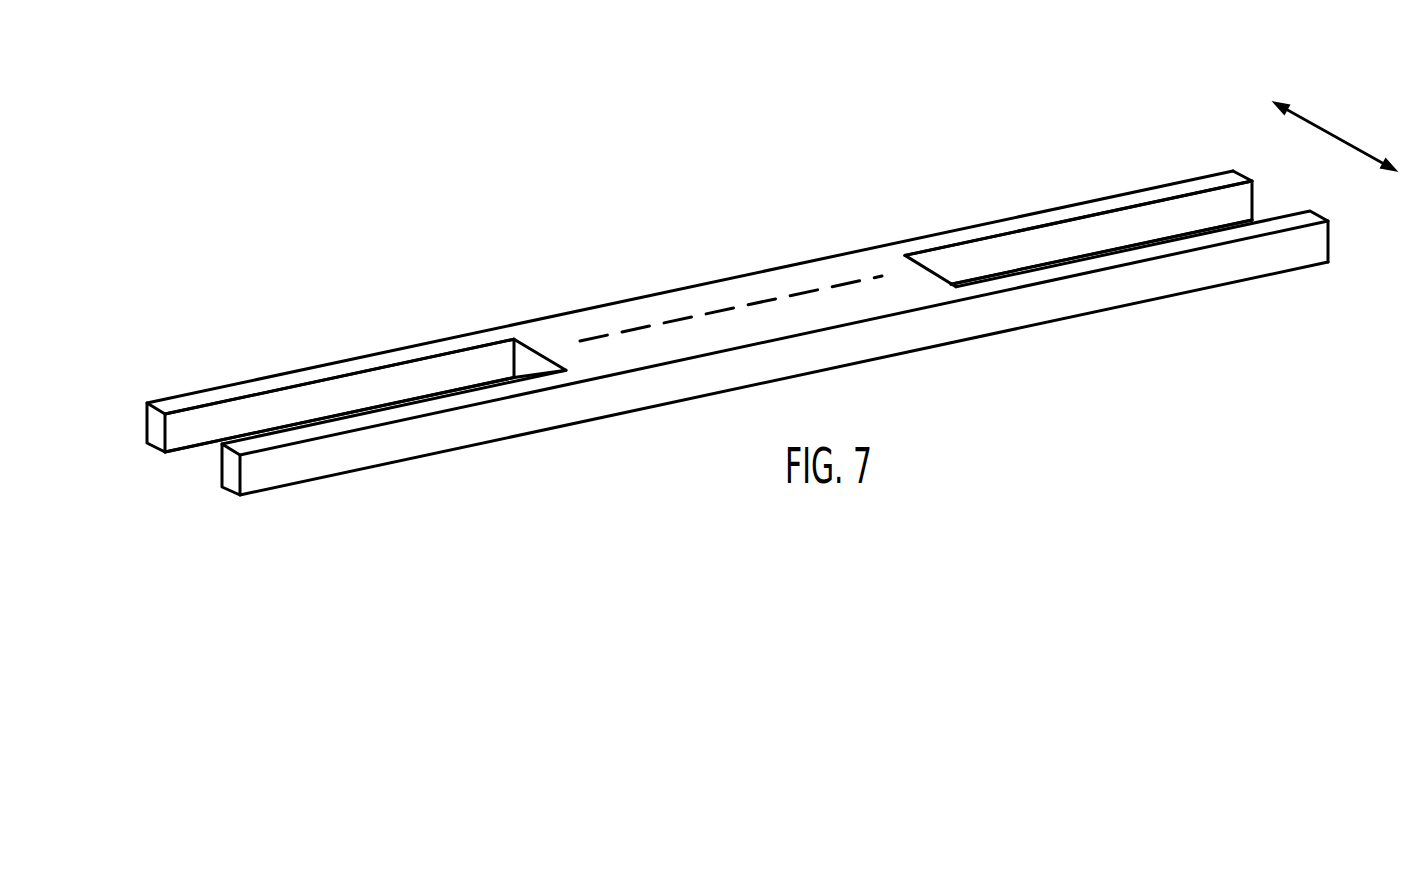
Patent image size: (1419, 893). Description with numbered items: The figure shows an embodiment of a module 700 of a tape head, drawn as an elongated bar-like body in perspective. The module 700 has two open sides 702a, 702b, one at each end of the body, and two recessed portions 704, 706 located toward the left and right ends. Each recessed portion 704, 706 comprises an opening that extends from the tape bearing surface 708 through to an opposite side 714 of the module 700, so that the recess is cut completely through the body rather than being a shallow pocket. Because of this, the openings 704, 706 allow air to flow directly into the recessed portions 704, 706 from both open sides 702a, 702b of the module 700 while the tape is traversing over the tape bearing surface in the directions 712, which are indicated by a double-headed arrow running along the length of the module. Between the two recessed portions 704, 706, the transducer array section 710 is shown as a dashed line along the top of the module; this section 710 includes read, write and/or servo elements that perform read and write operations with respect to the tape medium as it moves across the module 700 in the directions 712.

The module 700 is at (717, 337).
The open side 702a is at (162, 469).
The open side 702b is at (775, 327).
The recessed portion 704 is at (373, 345).
The recessed portion 706 is at (1130, 247).
The tape bearing surface 708 is at (547, 338).
The transducer array section 710 is at (745, 290).
The directions 712 is at (1337, 133).
The opposite side 714 is at (475, 446).